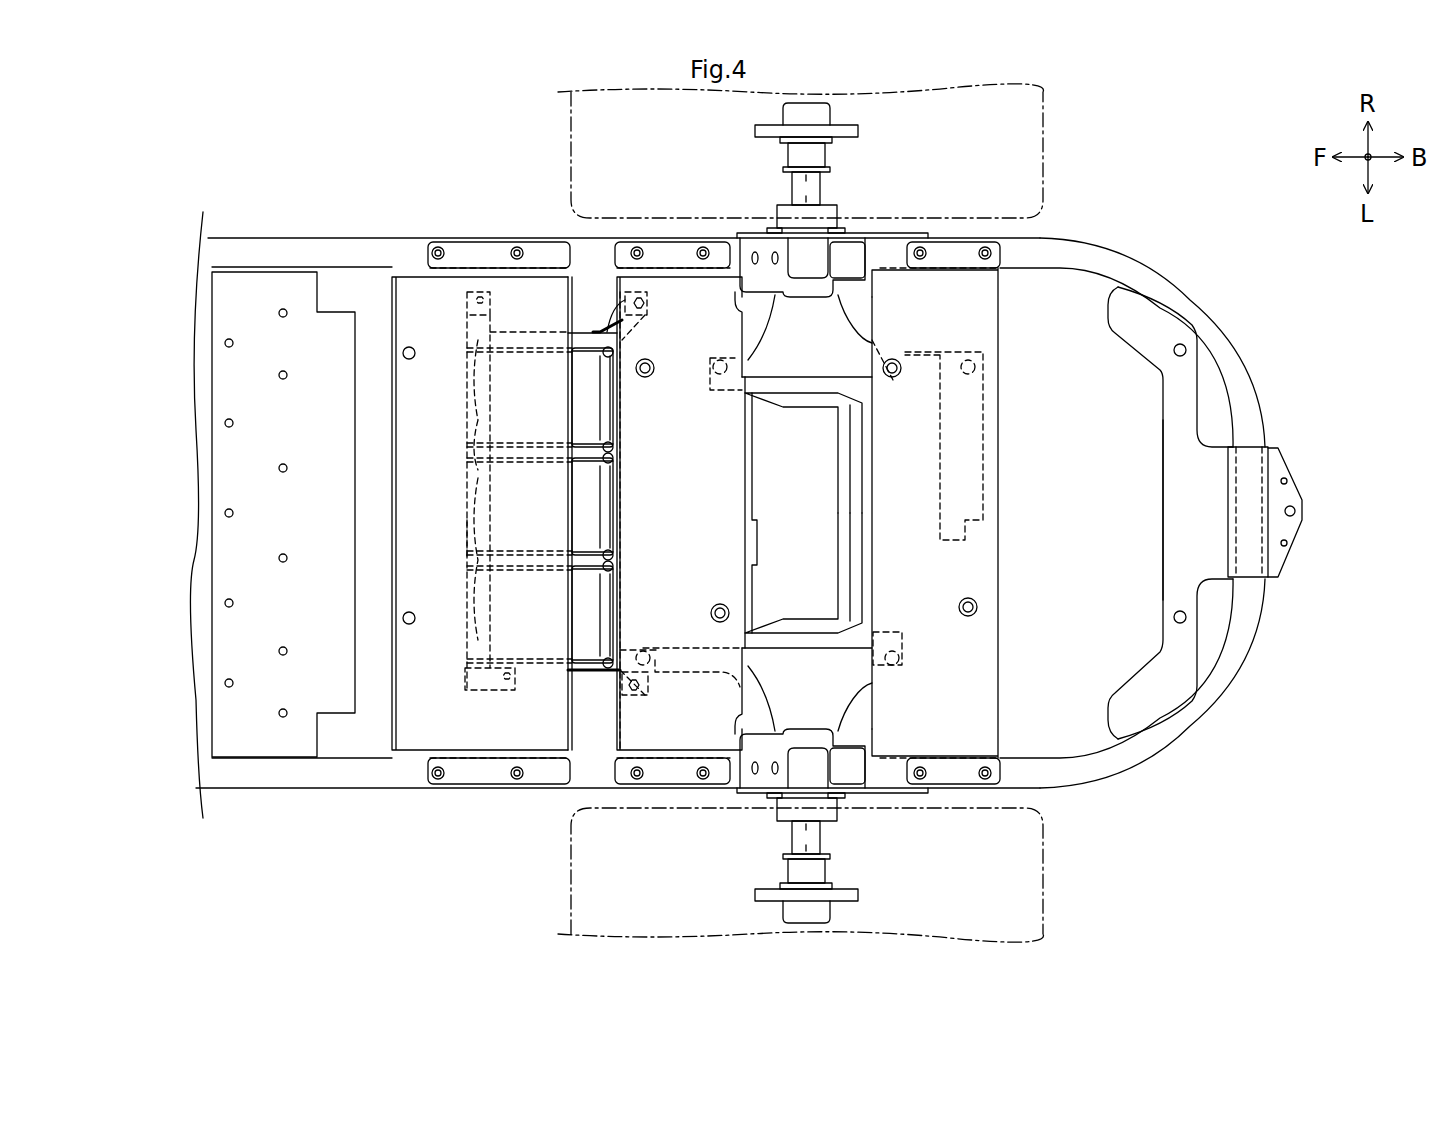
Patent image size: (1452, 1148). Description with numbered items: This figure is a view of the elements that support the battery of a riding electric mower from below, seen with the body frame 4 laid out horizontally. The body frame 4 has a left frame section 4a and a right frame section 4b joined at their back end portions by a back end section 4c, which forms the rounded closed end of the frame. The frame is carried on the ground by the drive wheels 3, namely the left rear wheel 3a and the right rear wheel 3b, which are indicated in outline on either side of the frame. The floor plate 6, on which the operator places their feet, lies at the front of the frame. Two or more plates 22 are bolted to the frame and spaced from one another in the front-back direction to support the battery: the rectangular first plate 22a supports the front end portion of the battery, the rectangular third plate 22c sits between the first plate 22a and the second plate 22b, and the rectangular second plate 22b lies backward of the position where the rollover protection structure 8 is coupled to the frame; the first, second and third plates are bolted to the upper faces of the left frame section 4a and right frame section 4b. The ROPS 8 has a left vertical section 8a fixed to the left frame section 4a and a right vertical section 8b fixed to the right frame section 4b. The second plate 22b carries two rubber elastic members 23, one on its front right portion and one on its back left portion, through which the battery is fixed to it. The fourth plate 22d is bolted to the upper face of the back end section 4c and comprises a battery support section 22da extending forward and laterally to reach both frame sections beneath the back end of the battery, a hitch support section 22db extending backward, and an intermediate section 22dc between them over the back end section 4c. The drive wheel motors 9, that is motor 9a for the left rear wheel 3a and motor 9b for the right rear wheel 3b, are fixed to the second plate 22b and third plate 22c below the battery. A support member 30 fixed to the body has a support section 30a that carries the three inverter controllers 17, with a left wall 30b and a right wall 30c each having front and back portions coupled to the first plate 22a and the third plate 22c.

The drive wheels 3 is at (878, 513).
The left rear wheel 3a is at (1043, 913).
The right rear wheel 3b is at (1043, 115).
The body frame 4 is at (756, 517).
The left frame section 4a is at (398, 777).
The right frame section 4b is at (400, 250).
The back end section 4c is at (1250, 608).
The floor plate 6 is at (250, 618).
The rollover protection structure (ROPS) 8 is at (832, 513).
The left vertical section 8a is at (813, 765).
The right vertical section 8b is at (813, 262).
The drive wheel motors 9 is at (803, 513).
The motor 9a is at (797, 640).
The motor 9b is at (797, 385).
The controllers 17 is at (587, 505).
The plates 22 is at (856, 571).
The first plate 22a is at (390, 722).
The second plate 22b is at (1002, 708).
The third plate 22c is at (618, 737).
The fourth plate 22d is at (1223, 513).
The battery support section 22da is at (1182, 470).
The hitch support section 22db is at (1290, 500).
The intermediate section 22dc is at (1268, 458).
The elastic members 23 is at (648, 366).
The support member 30 is at (562, 456).
The support section 30a is at (467, 520).
The left wall 30b is at (582, 655).
The right wall 30c is at (648, 303).